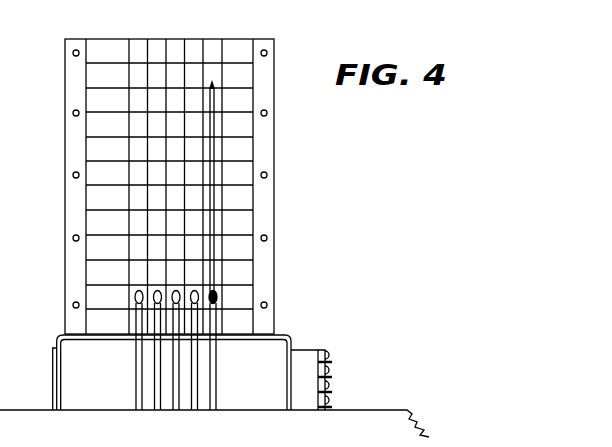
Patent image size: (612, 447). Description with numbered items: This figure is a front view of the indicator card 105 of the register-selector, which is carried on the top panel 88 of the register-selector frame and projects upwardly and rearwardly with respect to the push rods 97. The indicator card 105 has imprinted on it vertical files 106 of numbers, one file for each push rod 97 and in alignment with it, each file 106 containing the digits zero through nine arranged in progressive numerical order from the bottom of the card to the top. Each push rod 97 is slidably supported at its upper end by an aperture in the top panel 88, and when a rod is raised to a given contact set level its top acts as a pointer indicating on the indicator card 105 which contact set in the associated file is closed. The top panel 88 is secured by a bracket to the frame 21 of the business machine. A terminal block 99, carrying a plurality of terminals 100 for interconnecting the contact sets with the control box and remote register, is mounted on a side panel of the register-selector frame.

The indicator card 105 is at (67, 125).
The vertical files of numbers 106 is at (138, 48).
The push rod 97 is at (215, 105).
The top panel 88 is at (57, 338).
The terminal block 99 is at (318, 349).
The terminals 100 is at (332, 392).
The frame 21 is at (370, 420).